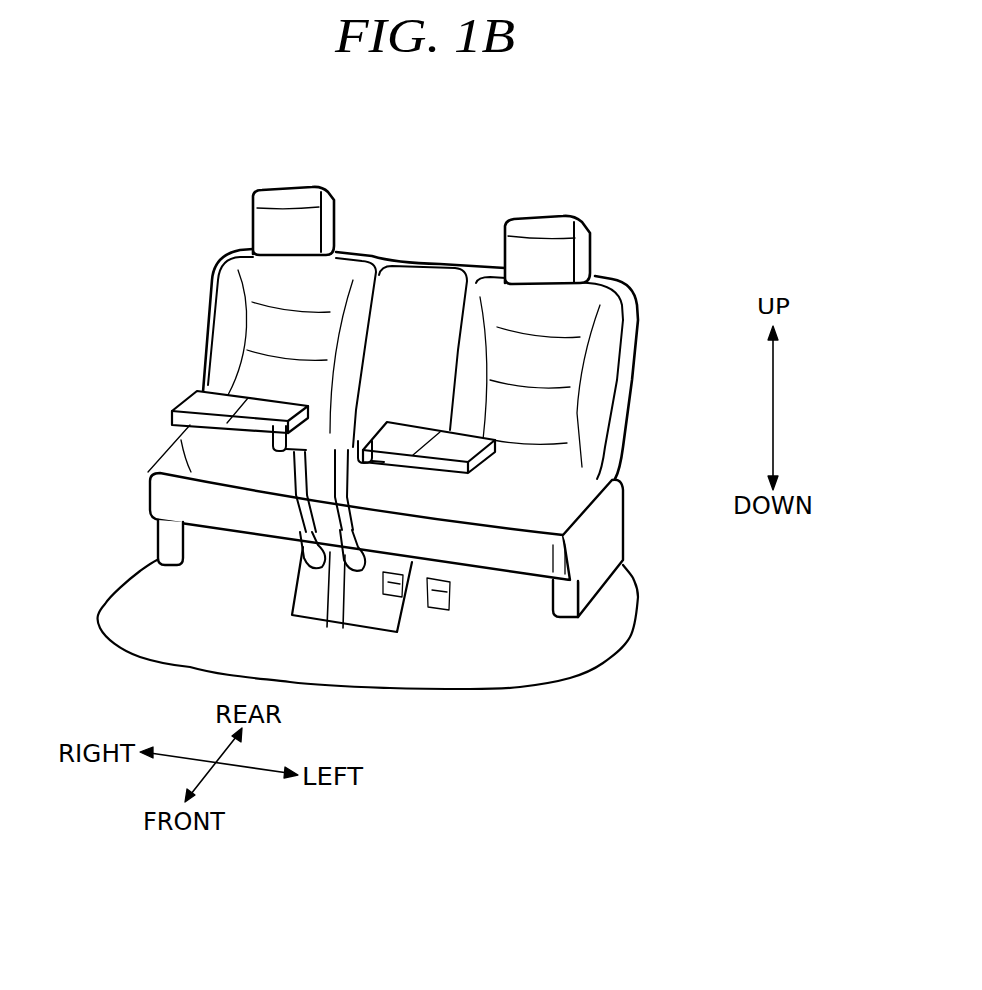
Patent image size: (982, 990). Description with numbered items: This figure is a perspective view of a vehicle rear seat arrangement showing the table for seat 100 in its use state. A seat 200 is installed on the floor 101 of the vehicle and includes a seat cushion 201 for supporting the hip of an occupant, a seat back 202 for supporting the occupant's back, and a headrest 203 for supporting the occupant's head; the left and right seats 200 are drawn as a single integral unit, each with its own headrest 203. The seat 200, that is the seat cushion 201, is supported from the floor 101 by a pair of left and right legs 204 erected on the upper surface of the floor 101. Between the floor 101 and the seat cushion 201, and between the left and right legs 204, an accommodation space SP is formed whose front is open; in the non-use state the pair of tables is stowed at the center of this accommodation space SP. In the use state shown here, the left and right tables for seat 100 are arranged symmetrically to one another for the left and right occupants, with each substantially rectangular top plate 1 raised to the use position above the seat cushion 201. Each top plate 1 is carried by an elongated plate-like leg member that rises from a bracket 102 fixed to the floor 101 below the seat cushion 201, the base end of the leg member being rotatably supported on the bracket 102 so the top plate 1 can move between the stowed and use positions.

The top plate 1 is at (228, 398).
The table for seat 100 is at (190, 391).
The floor 101 is at (577, 641).
The bracket 102 is at (305, 590).
The seat 200 is at (637, 299).
The seat cushion 201 is at (190, 470).
The seat back 202 is at (628, 344).
The headrest 203 is at (530, 222).
The leg 204 is at (160, 538).
The accommodation space SP is at (262, 545).